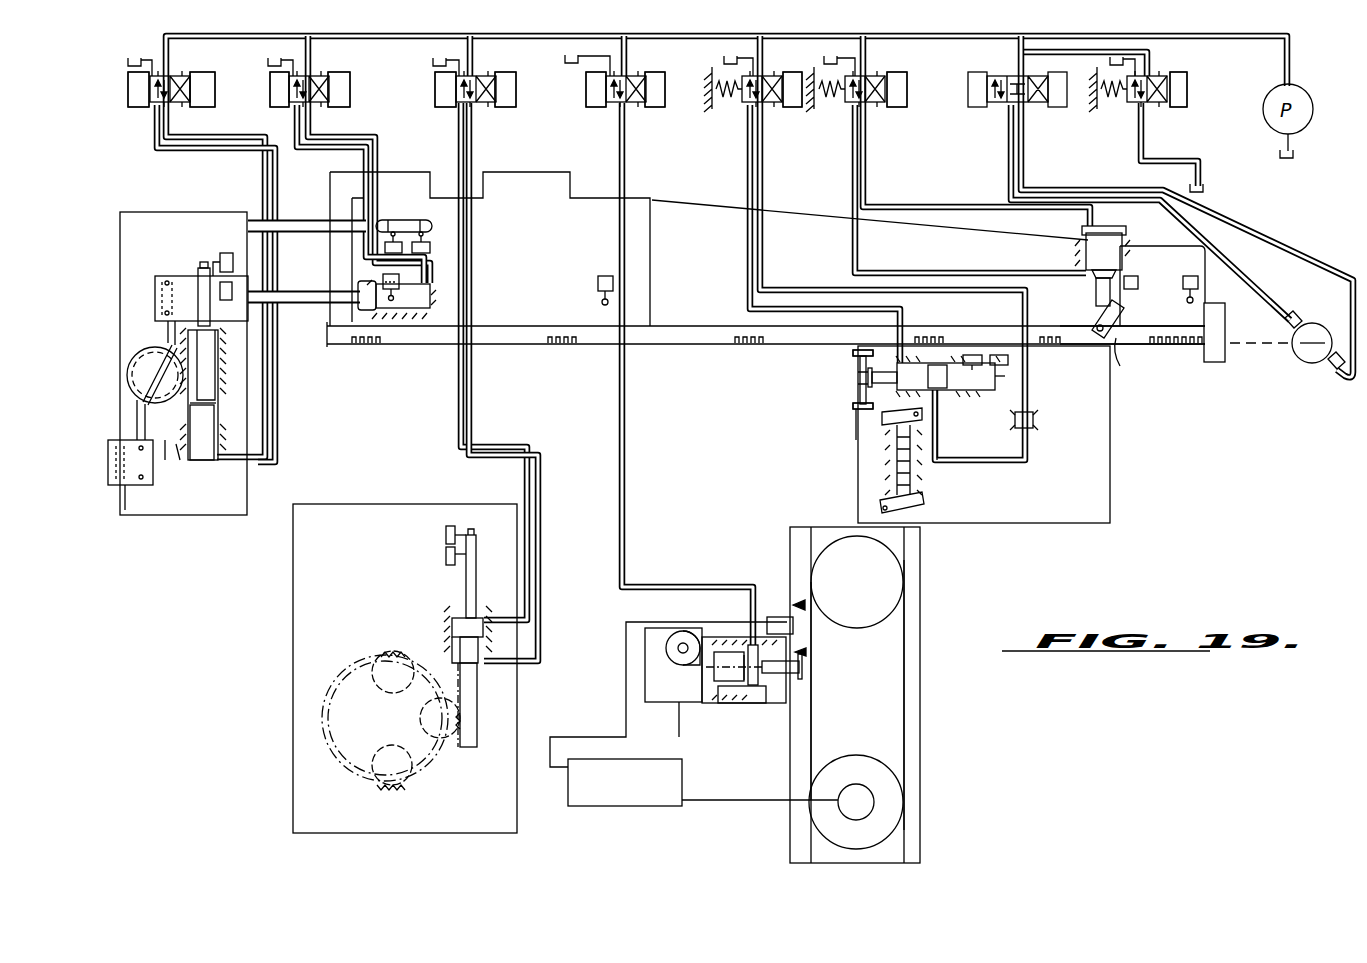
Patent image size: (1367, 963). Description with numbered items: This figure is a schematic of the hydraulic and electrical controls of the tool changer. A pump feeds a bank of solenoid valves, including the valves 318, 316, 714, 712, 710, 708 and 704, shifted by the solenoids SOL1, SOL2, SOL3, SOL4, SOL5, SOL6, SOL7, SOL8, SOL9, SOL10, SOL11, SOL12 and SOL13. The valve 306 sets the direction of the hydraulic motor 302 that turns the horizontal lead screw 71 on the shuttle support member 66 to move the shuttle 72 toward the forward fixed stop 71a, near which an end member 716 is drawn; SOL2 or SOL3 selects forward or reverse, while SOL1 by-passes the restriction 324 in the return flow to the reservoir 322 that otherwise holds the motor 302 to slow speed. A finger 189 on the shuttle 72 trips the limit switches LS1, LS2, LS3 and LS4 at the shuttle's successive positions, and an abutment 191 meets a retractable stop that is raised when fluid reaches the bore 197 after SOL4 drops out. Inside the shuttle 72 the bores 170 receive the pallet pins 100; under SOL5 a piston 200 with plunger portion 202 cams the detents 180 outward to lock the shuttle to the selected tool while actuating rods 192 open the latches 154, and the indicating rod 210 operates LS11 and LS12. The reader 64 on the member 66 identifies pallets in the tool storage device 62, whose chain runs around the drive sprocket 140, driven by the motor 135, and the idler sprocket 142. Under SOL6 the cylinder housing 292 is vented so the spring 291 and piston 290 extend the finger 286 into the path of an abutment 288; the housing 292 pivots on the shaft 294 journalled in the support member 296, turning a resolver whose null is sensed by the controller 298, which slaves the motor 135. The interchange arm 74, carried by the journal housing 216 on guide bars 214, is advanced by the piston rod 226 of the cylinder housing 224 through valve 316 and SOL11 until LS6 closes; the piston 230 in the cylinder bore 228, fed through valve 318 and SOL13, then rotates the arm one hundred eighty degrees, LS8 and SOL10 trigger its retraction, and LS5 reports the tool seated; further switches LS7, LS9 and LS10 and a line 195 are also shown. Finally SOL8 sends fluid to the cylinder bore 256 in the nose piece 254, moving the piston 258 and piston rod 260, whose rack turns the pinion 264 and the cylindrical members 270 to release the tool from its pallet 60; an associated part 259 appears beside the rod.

The valve 318 is at (180, 105).
The valve 316 is at (316, 105).
The solenoid valve 714 is at (475, 84).
The solenoid valve 712 is at (633, 84).
The solenoid valve 710 is at (765, 84).
The solenoid valve 708 is at (870, 84).
The solenoid valve 704 is at (1150, 84).
The solenoid SOL1 is at (1188, 93).
The solenoid SOL2 is at (1056, 107).
The solenoid SOL3 is at (978, 107).
The solenoid SOL4 is at (896, 107).
The solenoid SOL5 is at (792, 107).
The solenoid SOL6 is at (656, 107).
The solenoid SOL7 is at (598, 107).
The solenoid SOL8 is at (505, 107).
The solenoid SOL9 is at (446, 107).
The solenoid SOL10 is at (345, 84).
The solenoid SOL11 is at (280, 107).
The solenoid SOL12 is at (250, 65).
The solenoid SOL13 is at (140, 108).
The limit switch LS1 is at (1198, 283).
The limit switch LS2 is at (1138, 280).
The limit switch LS3 is at (598, 288).
The limit switch LS4 is at (432, 280).
The limit switch LS5 is at (432, 250).
The limit switch LS6 is at (390, 220).
The limit switch LS7 is at (228, 253).
The limit switch LS8 is at (245, 286).
The limit switch LS9 is at (446, 532).
The limit switch LS10 is at (446, 556).
The limit switch LS11 is at (968, 355).
The limit switch LS12 is at (1000, 355).
The valve 306 is at (1030, 120).
The restriction 324 is at (1180, 152).
The reservoir 322 is at (1208, 187).
The line 195 is at (1080, 256).
The guide bars 214 is at (292, 220).
The piston rod 226 is at (300, 305).
The journal housing 216 is at (248, 487).
The pallet 60 is at (178, 276).
The interchange arm 74 is at (150, 340).
The piston 230 is at (218, 401).
The cylinder bore 228 is at (212, 460).
The cylinder housing 224 is at (172, 460).
The shuttle support member 66 is at (511, 212).
The fixed stop 71a is at (340, 347).
The horizontal lead screw 71 is at (1178, 347).
The end block 716 is at (1215, 362).
The hydraulic motor 302 is at (1305, 363).
The shuttle 72 is at (1085, 441).
The bore 197 is at (1120, 238).
The actuating rods 192 is at (1096, 298).
The finger 189 is at (1122, 310).
The abutment 191 is at (1117, 342).
The indicating rod 210 is at (995, 379).
The plunger portion 202 is at (858, 377).
The detents 180 is at (853, 354).
The pallet pins 100 is at (856, 416).
The piston 200 is at (940, 393).
The latches 154 is at (922, 433).
The tool storage device 62 is at (921, 592).
The idler sprocket 142 is at (900, 567).
The reader 64 is at (815, 622).
The drive sprocket 140 is at (900, 816).
The motor 135 is at (850, 784).
The bores 170 is at (915, 702).
The abutment members 288 is at (795, 605).
The finger 286 is at (800, 672).
The piston 290 is at (752, 645).
The pivoting shaft 294 is at (675, 648).
The spring 291 is at (714, 666).
The support member 296 is at (735, 703).
The cylinder housing 292 is at (766, 690).
The controller 298 is at (600, 806).
The nose piece 254 is at (293, 564).
The rod 259 is at (466, 574).
The piston 258 is at (452, 622).
The cylinder bore 256 is at (458, 650).
The piston rod 260 is at (478, 737).
The cylindrical members 270 is at (385, 684).
The pinion 264 is at (450, 760).